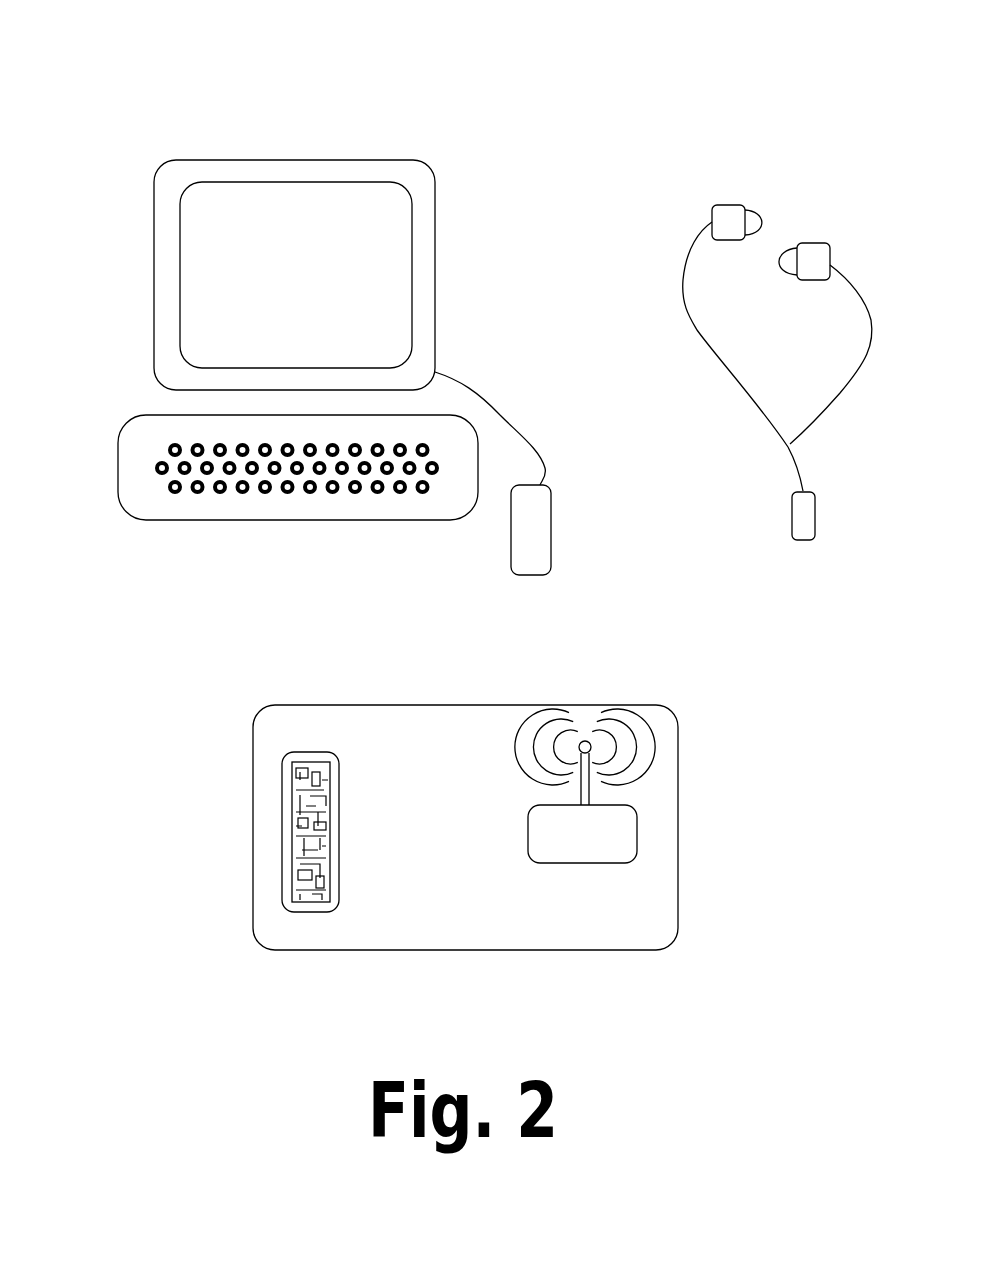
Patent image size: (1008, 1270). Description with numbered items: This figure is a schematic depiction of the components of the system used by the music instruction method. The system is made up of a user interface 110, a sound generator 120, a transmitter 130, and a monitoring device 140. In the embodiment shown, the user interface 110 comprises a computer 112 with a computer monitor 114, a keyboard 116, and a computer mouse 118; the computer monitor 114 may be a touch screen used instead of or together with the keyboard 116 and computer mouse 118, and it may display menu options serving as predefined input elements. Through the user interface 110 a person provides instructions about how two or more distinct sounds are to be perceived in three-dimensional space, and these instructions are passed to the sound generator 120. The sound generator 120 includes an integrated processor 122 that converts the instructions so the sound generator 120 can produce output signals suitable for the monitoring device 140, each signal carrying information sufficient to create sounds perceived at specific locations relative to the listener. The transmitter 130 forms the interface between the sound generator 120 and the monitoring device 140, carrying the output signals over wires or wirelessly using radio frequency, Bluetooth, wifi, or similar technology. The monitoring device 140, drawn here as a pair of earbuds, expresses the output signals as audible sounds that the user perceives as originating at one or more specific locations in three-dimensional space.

The user interface 110 is at (160, 130).
The computer 112 is at (415, 158).
The computer monitor 114 is at (375, 263).
The keyboard 116 is at (220, 503).
The computer mouse 118 is at (533, 532).
The sound generator 120 is at (253, 767).
The processor 122 is at (293, 837).
The transmitter 130 is at (575, 833).
The monitoring device 140 is at (735, 205).